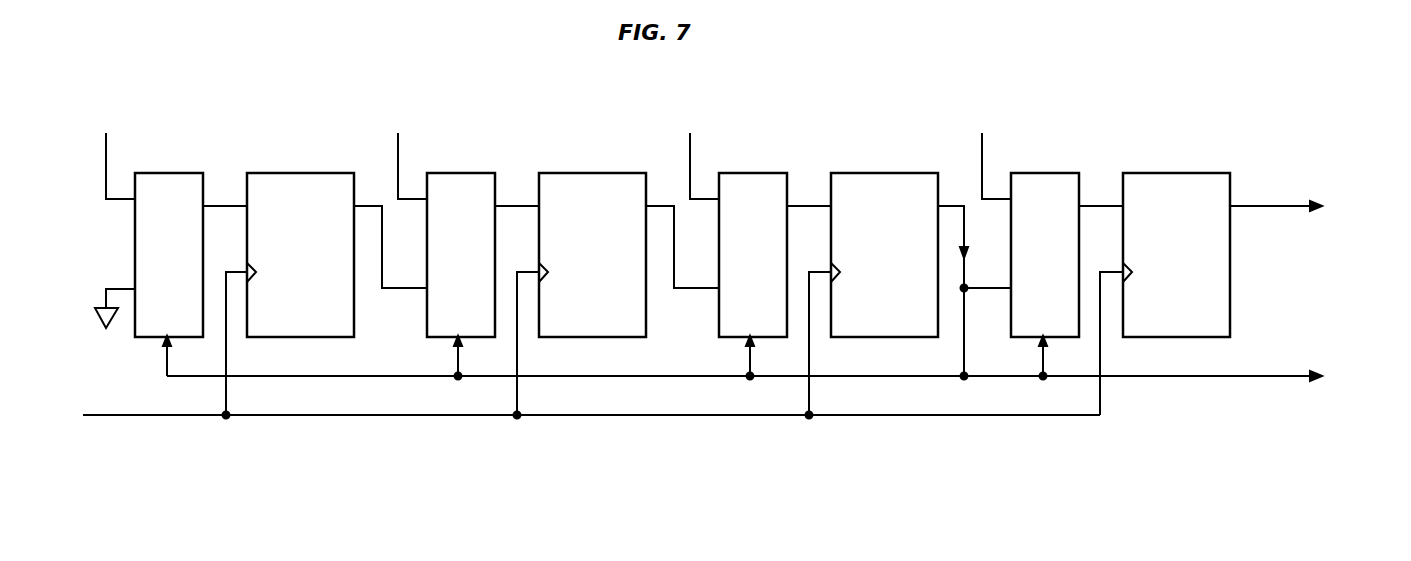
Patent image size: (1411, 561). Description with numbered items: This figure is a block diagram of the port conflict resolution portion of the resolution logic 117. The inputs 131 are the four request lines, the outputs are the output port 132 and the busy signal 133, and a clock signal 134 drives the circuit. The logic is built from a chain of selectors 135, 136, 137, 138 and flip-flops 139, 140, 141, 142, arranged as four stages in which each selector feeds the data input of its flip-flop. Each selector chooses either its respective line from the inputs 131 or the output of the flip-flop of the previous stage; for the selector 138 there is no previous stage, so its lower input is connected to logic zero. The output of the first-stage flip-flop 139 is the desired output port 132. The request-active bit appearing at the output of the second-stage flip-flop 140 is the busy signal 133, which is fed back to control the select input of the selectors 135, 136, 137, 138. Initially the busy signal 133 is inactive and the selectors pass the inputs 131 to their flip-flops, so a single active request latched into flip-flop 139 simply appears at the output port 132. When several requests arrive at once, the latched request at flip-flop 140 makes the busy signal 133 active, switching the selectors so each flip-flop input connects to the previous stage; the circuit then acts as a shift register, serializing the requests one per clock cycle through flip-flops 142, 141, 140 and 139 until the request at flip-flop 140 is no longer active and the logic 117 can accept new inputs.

The resolution logic 117 is at (84, 433).
The inputs 131 is at (558, 119).
The output port OUT0 132 is at (1320, 212).
The busy0 signal 133 is at (1320, 382).
The clock signal CLK 134 is at (83, 398).
The selector 135 is at (1023, 242).
The selector 136 is at (731, 242).
The selector 137 is at (439, 242).
The selector 138 is at (147, 240).
The flip-flop 139 is at (1172, 294).
The flip-flop 140 is at (899, 296).
The flip-flop 141 is at (607, 296).
The flip-flop 142 is at (315, 296).